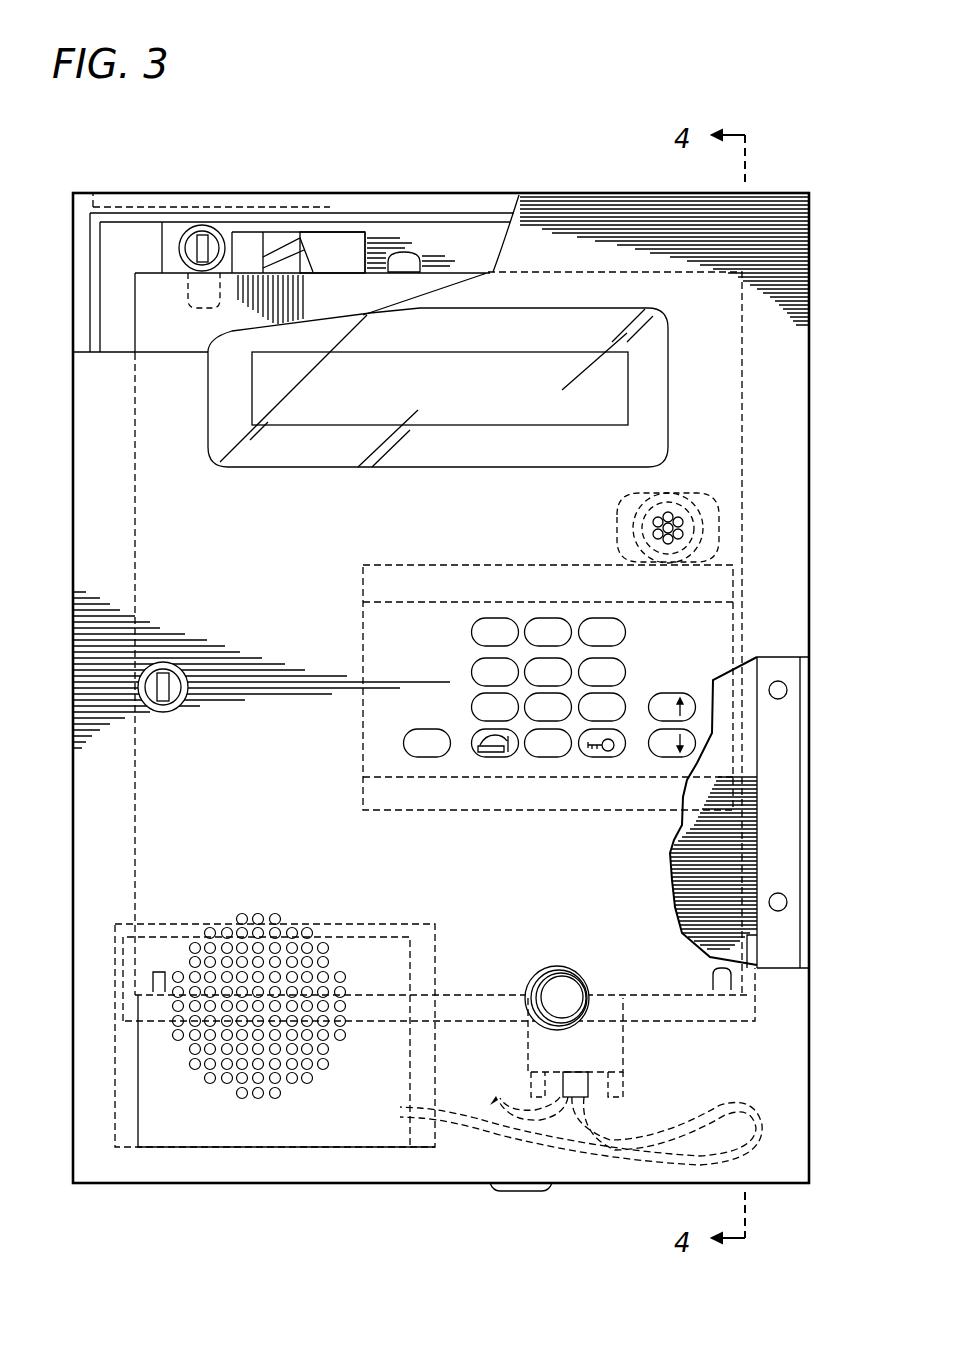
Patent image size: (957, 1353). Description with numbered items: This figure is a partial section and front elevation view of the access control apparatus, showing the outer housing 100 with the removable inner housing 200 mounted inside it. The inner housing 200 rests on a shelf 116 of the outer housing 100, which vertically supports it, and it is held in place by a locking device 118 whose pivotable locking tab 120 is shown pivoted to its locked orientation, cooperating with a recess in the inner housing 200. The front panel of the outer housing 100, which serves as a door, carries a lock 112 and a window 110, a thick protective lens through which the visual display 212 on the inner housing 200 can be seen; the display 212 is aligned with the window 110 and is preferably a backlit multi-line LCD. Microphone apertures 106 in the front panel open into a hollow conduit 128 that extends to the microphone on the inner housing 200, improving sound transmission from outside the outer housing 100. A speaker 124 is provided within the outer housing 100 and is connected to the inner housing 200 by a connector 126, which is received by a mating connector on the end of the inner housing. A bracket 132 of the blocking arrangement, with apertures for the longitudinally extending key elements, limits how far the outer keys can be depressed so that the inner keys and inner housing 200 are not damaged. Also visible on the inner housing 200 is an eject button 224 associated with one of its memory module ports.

The outer housing 100 is at (74, 466).
The microphone apertures 106 is at (680, 522).
The window 110 is at (668, 393).
The lock 112 is at (163, 712).
The shelf 116 is at (345, 238).
The locking device 118 is at (197, 168).
The locking tab 120 is at (202, 290).
The speaker 124 is at (330, 1147).
The connector 126 is at (600, 1068).
The hollow conduit 128 is at (668, 493).
The bracket 132 is at (446, 800).
The inner housing 200 is at (147, 327).
The visual display 212 is at (628, 355).
The eject button 224 is at (405, 255).